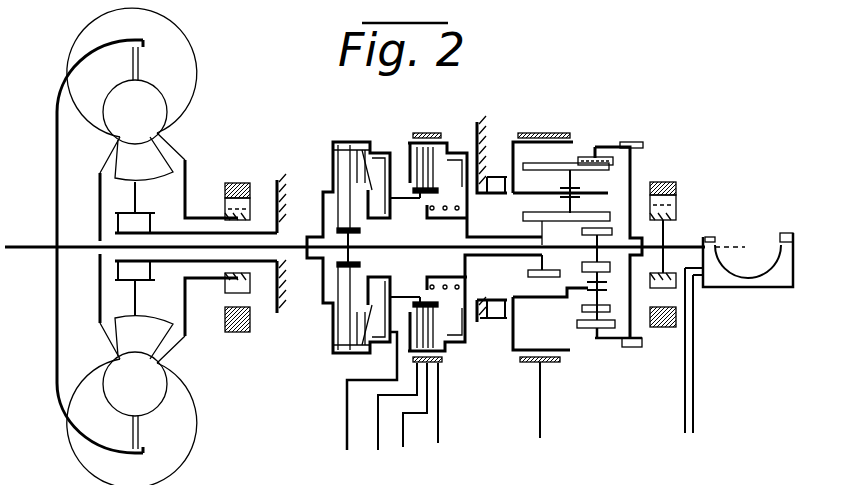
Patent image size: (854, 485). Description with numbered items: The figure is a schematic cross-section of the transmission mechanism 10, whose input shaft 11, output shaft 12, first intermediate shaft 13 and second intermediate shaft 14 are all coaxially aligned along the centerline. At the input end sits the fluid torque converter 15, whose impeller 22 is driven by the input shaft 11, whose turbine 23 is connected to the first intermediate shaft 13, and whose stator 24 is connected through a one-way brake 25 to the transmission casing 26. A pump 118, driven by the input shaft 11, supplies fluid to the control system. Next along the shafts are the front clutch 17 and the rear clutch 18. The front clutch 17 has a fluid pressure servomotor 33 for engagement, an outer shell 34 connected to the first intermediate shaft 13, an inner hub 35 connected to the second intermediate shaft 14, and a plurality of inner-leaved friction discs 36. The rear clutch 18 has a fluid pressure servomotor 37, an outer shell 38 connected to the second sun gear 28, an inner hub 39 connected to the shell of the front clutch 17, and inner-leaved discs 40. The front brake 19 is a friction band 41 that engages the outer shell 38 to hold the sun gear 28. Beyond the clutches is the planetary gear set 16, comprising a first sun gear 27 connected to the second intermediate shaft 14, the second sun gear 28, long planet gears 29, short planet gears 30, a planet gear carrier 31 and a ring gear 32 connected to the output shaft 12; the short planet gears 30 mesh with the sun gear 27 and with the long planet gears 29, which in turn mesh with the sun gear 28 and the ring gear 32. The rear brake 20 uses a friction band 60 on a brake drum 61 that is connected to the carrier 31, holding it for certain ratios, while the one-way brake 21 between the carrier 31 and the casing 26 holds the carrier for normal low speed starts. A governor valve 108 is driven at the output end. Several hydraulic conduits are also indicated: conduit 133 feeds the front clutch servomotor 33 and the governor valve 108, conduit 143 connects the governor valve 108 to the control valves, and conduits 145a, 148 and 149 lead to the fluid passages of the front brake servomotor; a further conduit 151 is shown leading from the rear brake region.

The transmission mechanism 10 is at (675, 147).
The input shaft 11 is at (24, 246).
The output shaft 12 is at (694, 246).
The first intermediate shaft 13 is at (175, 263).
The second intermediate shaft 14 is at (433, 249).
The fluid torque converter 15 is at (127, 246).
The planetary gear set 16 is at (598, 144).
The front clutch 17 is at (340, 170).
The rear clutch 18 is at (457, 159).
The front brake 19 is at (431, 131).
The rear brake 20 is at (541, 131).
The one-way brake 21 is at (497, 175).
The impeller 22 is at (188, 92).
The turbine 23 is at (80, 115).
The stator 24 is at (135, 143).
The one-way brake 25 is at (114, 273).
The transmission casing 26 is at (277, 180).
The first sun gear 27 is at (582, 232).
The second sun gear 28 is at (528, 274).
The long planet gears 29 is at (556, 167).
The short planet gears 30 is at (582, 308).
The planet gear carrier 31 is at (513, 336).
The ring gear 32 is at (600, 330).
The servomotor 33 is at (384, 144).
The outer shell 34 is at (342, 349).
The inner hub 35 is at (340, 232).
The friction discs 36 is at (350, 322).
The servomotor 37 is at (460, 145).
The outer shell 38 is at (449, 346).
The inner hub 39 is at (420, 200).
The inner-leaved discs 40 is at (410, 343).
The friction band 41 is at (440, 366).
The friction band 60 is at (555, 365).
The brake drum 61 is at (560, 141).
The governor valve 108 is at (768, 290).
The pump 118 is at (240, 182).
The conduit 133 is at (347, 420).
The conduit 143 is at (696, 414).
The conduit 145a is at (438, 428).
The conduit 148 is at (378, 443).
The conduit 149 is at (403, 440).
The hydraulic line 151 is at (541, 421).